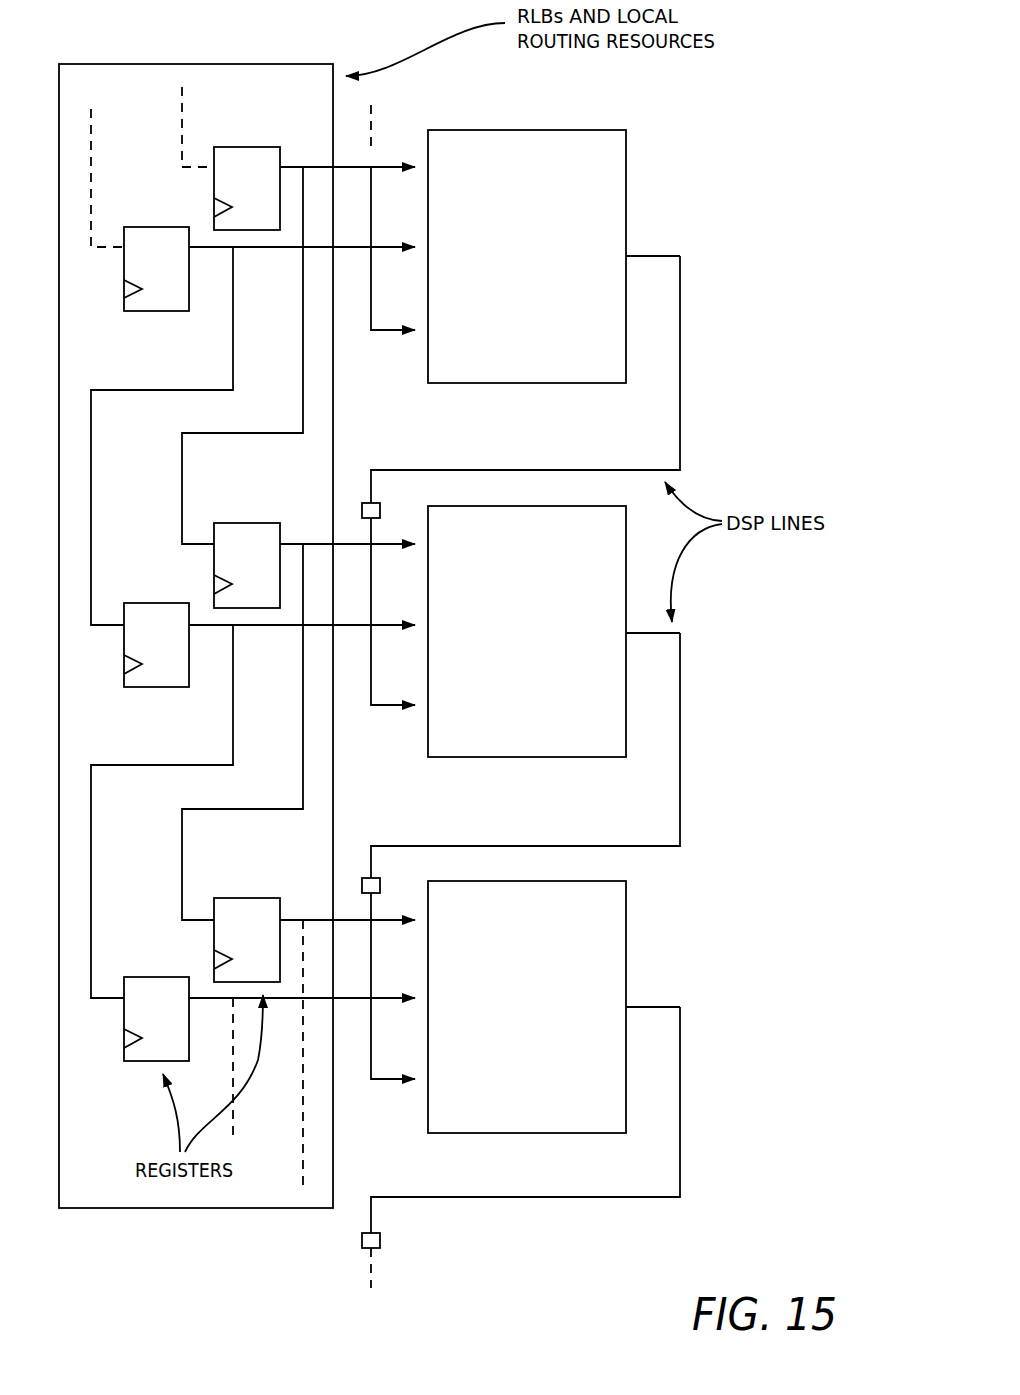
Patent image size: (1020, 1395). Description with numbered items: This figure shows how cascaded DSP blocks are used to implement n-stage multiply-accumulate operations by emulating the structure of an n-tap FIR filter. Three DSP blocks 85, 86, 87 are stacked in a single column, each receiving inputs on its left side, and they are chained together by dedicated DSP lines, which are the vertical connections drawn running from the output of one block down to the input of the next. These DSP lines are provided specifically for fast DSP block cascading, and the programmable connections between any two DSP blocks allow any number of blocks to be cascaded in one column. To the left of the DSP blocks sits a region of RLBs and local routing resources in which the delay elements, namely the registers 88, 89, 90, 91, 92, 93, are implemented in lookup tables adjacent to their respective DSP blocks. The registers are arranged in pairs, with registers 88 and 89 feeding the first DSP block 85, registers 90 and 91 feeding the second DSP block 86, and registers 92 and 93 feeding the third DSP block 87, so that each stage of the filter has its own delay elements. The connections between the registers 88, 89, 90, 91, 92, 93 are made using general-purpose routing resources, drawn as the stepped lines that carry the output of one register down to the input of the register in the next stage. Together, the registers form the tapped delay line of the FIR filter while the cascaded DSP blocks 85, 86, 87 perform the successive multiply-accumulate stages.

The DSP block 85 is at (626, 152).
The DSP block 86 is at (585, 757).
The DSP block 87 is at (626, 905).
The register 88 is at (136, 227).
The register 89 is at (242, 147).
The register 90 is at (143, 603).
The register 91 is at (260, 523).
The register 92 is at (141, 977).
The register 93 is at (254, 898).